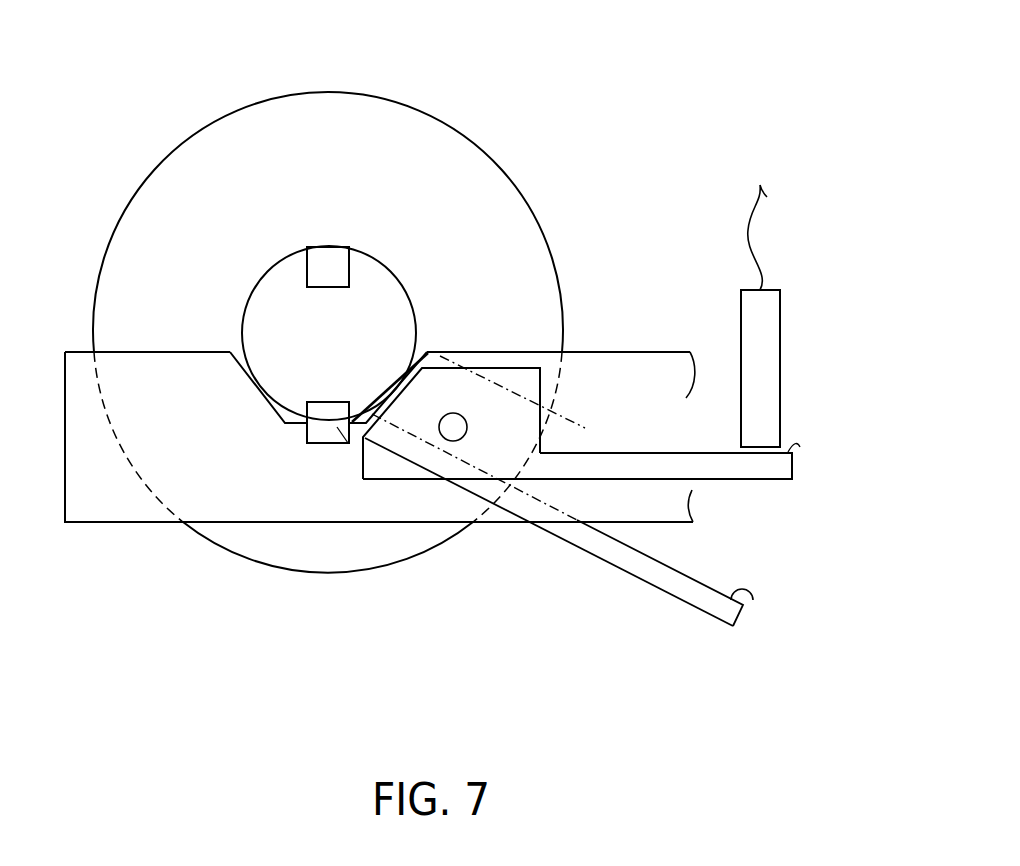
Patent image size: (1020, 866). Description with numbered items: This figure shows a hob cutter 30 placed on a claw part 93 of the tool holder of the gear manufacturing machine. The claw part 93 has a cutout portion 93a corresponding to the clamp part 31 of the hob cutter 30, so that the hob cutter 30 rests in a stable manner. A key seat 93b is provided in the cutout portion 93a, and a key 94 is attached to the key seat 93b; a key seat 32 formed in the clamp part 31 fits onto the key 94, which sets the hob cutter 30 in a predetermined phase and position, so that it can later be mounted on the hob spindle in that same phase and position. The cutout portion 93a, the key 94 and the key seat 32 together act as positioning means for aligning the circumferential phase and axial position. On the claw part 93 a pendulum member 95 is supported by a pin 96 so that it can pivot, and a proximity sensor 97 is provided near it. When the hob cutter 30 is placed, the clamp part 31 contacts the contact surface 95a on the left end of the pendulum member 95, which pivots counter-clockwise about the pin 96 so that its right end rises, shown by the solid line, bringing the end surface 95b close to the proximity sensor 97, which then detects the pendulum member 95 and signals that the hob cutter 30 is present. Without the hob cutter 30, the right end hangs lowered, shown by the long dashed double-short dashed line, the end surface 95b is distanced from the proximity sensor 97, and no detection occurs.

The hob cutter 30 is at (328, 292).
The clamp part 31 is at (250, 303).
The key seat 32 is at (205, 278).
The claw part 93 is at (376, 498).
The cutout portion 93a is at (242, 467).
The key seat 93b is at (360, 498).
The key 94 is at (354, 519).
The pendulum member 95 is at (577, 513).
The contact surface 95a is at (405, 492).
The end surface 95b is at (766, 582).
The pin 96 is at (451, 482).
The proximity sensor 97 is at (728, 316).